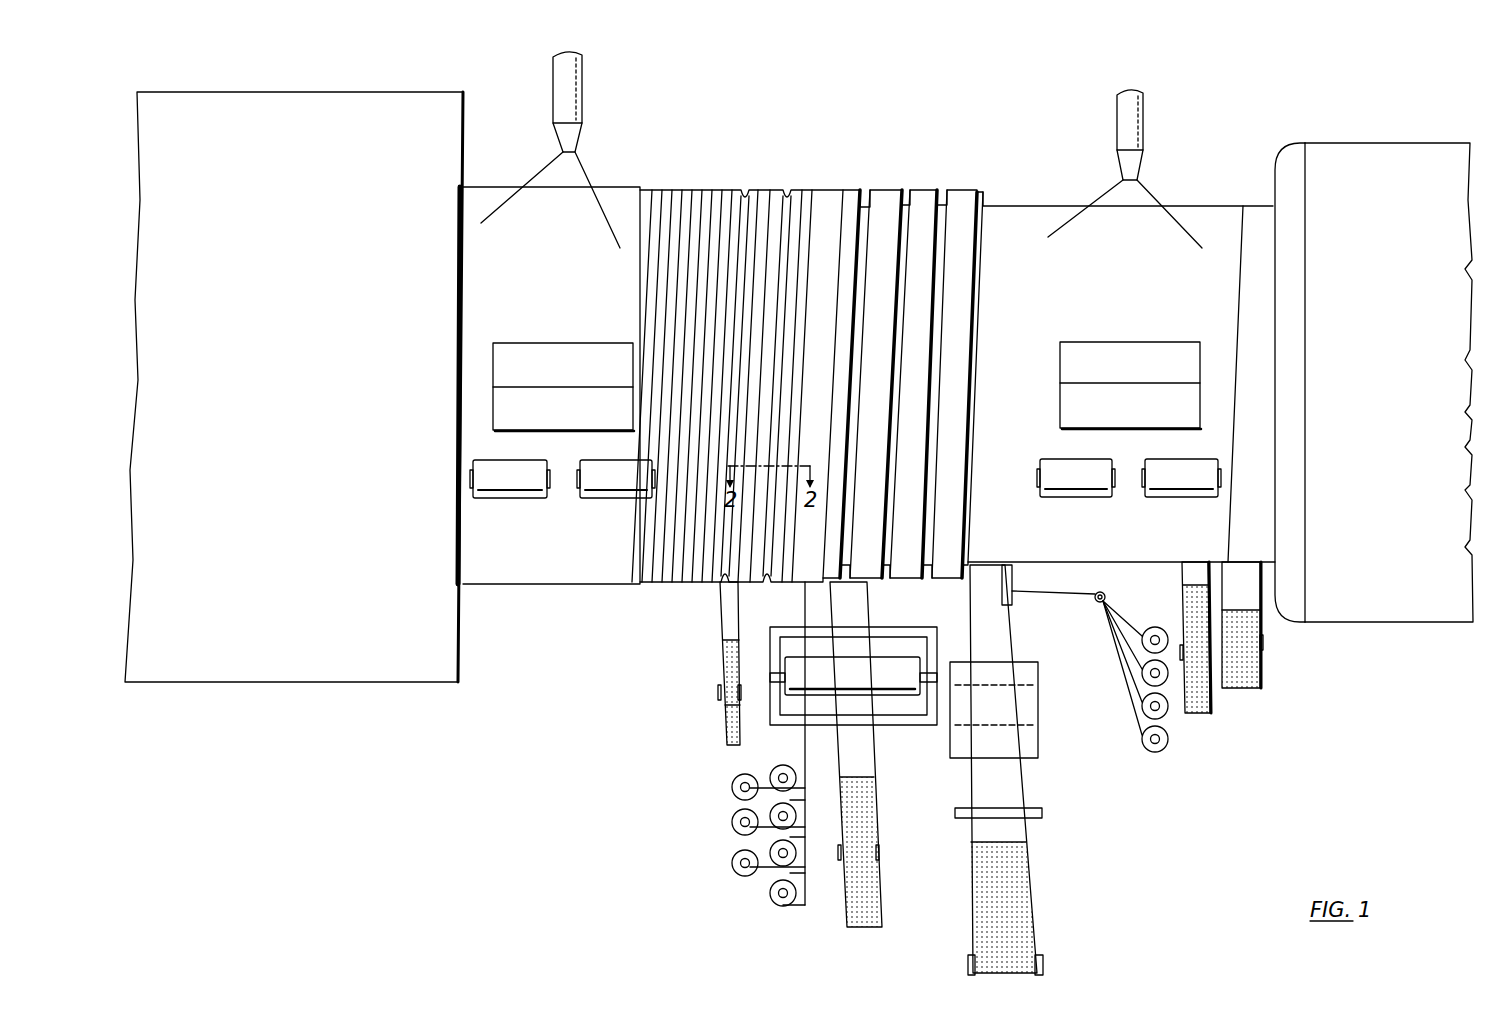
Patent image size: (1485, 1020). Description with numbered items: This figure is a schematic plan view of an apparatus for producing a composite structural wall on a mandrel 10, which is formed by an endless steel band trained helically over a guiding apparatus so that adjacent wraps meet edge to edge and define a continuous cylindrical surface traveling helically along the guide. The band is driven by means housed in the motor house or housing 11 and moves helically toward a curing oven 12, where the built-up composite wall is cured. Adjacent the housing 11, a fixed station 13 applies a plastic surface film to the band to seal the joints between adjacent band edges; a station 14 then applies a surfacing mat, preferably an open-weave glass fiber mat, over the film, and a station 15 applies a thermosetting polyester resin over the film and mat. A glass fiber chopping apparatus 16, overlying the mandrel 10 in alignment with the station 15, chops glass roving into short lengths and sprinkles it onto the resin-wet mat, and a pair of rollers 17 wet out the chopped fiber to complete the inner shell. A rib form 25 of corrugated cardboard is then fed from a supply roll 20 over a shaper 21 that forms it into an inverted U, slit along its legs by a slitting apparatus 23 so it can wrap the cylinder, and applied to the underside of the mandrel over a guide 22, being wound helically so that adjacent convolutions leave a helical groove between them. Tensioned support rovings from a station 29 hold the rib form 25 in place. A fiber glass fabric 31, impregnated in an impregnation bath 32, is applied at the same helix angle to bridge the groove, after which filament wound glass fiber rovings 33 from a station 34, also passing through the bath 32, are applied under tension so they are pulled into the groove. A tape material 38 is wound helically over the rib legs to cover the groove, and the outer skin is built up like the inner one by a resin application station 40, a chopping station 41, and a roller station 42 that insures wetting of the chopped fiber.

The mandrel 10 is at (1027, 197).
The housing 11 is at (1404, 161).
The curing oven 12 is at (325, 106).
The fixed station 13 is at (1258, 689).
The station 14 is at (1208, 712).
The station 15 is at (1145, 118).
The glass fiber chopping apparatus 16 is at (1141, 379).
The rollers 17 is at (1155, 497).
The supply roll 20 is at (1015, 895).
The shaper 21 is at (1030, 745).
The guide 22 is at (1012, 600).
The slitting apparatus 23 is at (1034, 819).
The rib form 25 is at (977, 320).
The station 29 is at (1160, 748).
The fiber glass fabric 31 is at (868, 813).
The impregnation bath 32 is at (897, 688).
The filament wound glass fiber rovings 33 is at (803, 745).
The station 34 is at (732, 820).
The tape material 38 is at (727, 736).
The resin application station 40 is at (583, 87).
The chopping station 41 is at (578, 379).
The roller station 42 is at (598, 497).